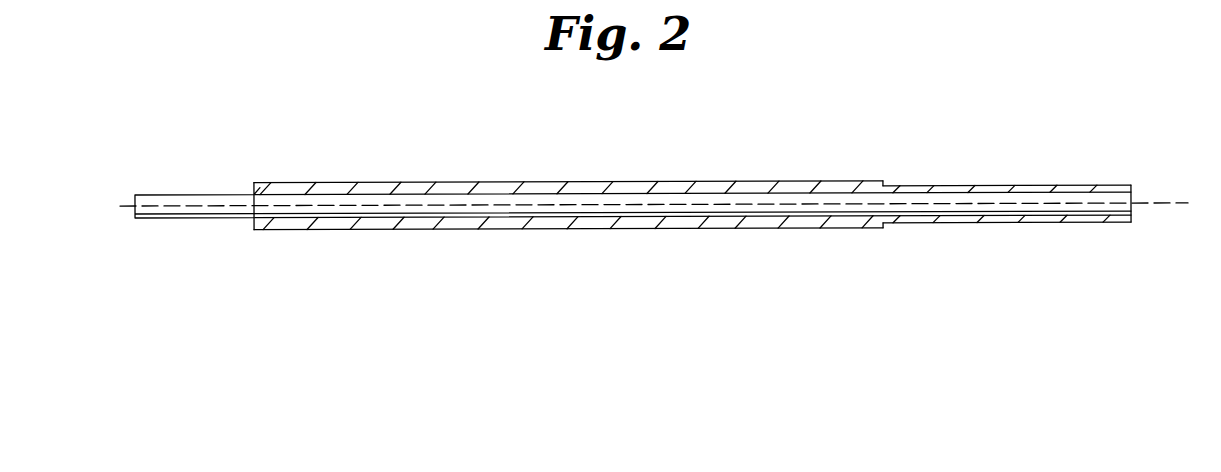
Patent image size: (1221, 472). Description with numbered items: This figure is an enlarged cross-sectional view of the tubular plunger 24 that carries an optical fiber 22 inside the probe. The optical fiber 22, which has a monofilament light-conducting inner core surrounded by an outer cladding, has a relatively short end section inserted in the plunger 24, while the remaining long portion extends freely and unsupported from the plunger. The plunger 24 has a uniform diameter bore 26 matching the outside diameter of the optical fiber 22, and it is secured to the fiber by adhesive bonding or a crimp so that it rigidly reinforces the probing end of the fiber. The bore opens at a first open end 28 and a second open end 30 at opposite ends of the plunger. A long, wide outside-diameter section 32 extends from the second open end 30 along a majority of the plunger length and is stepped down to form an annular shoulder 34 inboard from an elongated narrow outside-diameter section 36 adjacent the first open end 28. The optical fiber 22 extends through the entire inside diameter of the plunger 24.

The optical fiber 22 is at (176, 200).
The tubular plunger 24 is at (812, 137).
The uniform diameter bore 26 is at (711, 197).
The first open end 28 is at (1133, 196).
The second open end 30 is at (254, 206).
The wide O.D. section 32 is at (537, 137).
The annular shoulder 34 is at (946, 137).
The narrow O.D. section 36 is at (1070, 137).